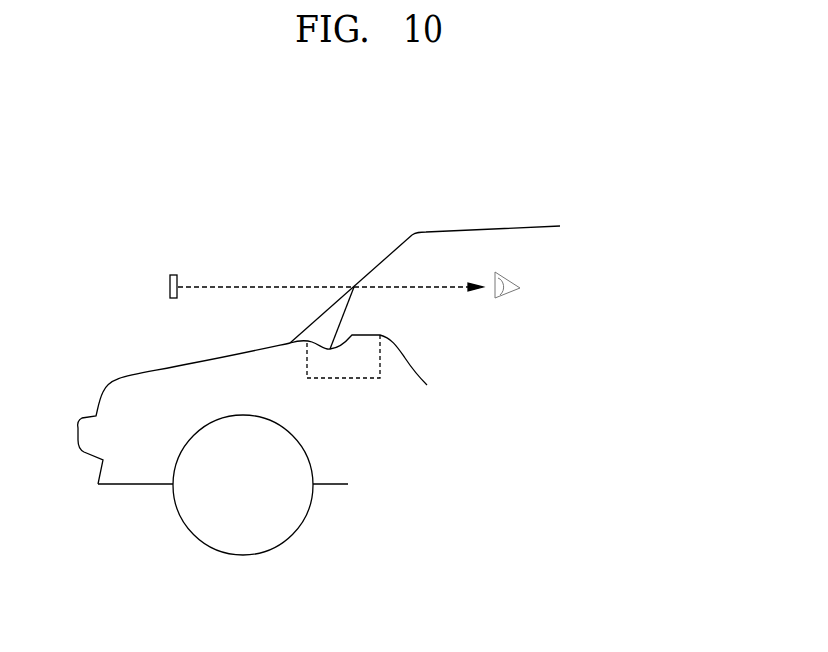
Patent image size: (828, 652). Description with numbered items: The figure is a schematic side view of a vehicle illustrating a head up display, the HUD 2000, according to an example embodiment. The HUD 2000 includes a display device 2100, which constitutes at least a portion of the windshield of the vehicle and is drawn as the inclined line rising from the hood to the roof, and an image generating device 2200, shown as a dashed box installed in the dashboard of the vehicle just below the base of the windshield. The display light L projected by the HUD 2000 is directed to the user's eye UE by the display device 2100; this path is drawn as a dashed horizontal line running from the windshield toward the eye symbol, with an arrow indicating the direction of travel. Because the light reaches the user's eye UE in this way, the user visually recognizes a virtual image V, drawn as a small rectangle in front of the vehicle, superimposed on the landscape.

The HUD 2000 is at (557, 160).
The display device 2100 is at (382, 262).
The image generating device 2200 is at (353, 378).
The virtual image V is at (170, 272).
The display light L is at (431, 285).
The user's eye UE is at (520, 290).